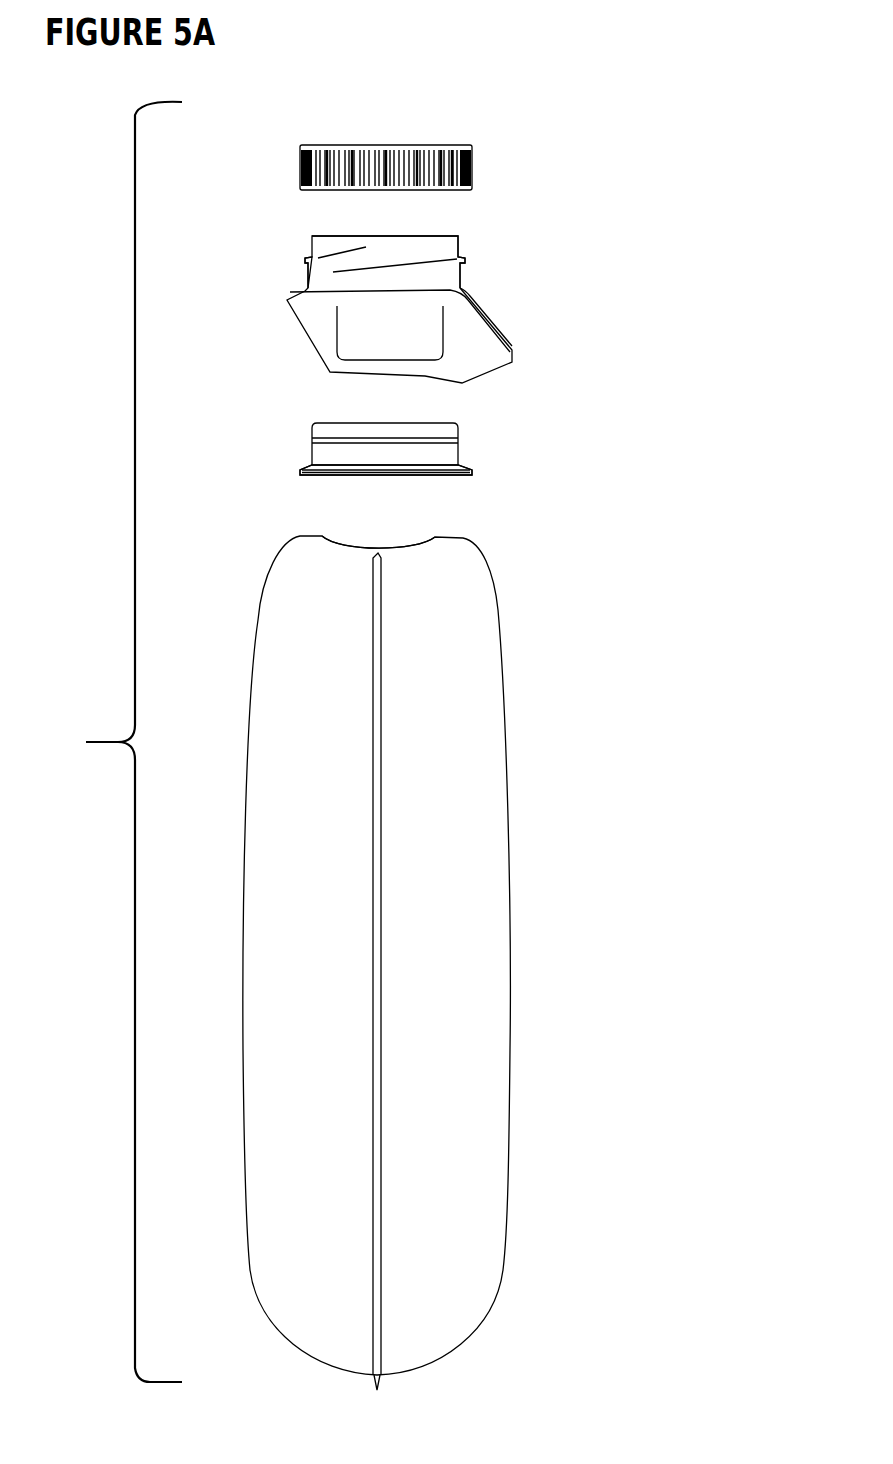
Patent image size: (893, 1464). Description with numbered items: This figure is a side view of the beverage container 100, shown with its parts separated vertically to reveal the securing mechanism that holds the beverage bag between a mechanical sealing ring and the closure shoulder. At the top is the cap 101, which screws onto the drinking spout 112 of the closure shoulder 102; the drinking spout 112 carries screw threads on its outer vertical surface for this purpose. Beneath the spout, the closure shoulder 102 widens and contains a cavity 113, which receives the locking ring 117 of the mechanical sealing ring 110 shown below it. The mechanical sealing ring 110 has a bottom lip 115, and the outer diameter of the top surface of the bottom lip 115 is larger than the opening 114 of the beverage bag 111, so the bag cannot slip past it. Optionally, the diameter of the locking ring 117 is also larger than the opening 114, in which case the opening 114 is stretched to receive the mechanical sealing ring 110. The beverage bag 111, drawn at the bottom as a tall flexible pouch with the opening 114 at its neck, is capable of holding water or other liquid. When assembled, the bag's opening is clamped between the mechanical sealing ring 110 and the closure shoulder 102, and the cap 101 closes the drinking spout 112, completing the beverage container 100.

The beverage container 100 is at (64, 771).
The cap 101 is at (311, 173).
The closure shoulder 102 is at (301, 318).
The drinking spout 112 is at (477, 254).
The cavity 113 is at (364, 335).
The locking ring 117 is at (303, 440).
The mechanical sealing ring 110 is at (289, 469).
The bottom lip 115 is at (475, 466).
The opening 114 is at (400, 529).
The beverage bag 111 is at (291, 648).